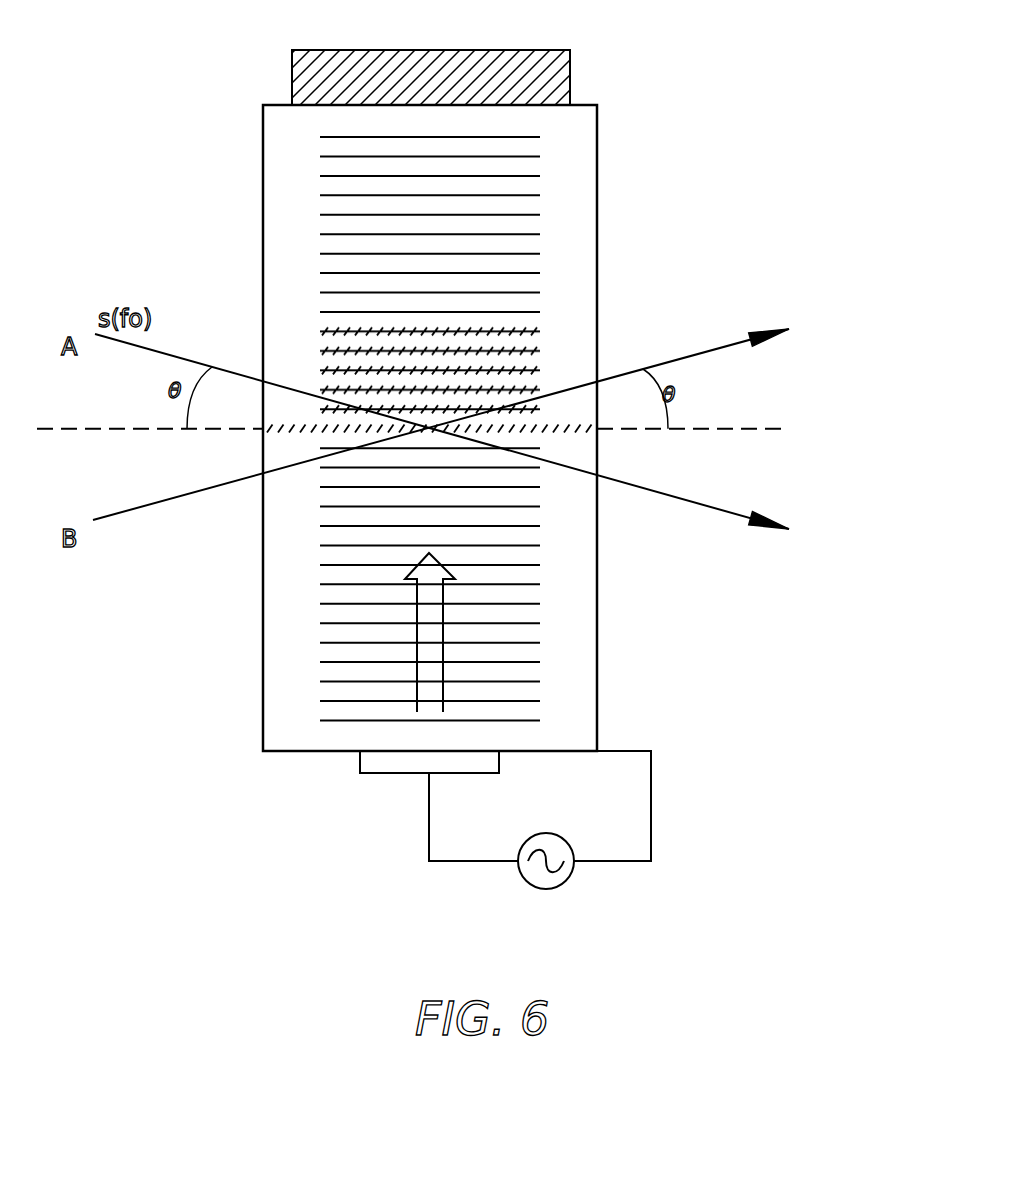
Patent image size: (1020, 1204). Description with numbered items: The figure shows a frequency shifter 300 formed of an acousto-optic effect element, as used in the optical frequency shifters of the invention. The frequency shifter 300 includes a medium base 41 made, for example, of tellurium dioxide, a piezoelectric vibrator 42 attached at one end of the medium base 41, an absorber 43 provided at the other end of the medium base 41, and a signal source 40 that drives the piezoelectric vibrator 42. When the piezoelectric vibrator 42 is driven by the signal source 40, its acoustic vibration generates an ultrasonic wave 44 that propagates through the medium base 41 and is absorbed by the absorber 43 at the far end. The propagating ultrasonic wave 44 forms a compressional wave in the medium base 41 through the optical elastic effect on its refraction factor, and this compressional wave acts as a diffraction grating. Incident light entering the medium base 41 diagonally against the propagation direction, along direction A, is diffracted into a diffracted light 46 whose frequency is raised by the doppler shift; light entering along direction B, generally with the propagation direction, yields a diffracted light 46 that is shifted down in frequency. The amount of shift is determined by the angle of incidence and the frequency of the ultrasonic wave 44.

The frequency shifter 300 is at (688, 180).
The medium base 41 is at (568, 611).
The absorber 43 is at (402, 52).
The ultrasonic wave 44 is at (405, 577).
The piezoelectric vibrator 42 is at (402, 763).
The signal source 40 is at (552, 889).
The diffracted light 46 is at (492, 405).